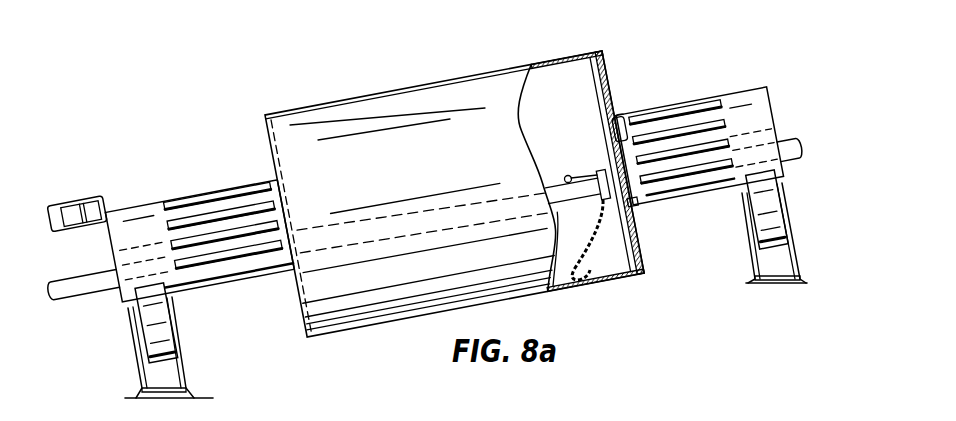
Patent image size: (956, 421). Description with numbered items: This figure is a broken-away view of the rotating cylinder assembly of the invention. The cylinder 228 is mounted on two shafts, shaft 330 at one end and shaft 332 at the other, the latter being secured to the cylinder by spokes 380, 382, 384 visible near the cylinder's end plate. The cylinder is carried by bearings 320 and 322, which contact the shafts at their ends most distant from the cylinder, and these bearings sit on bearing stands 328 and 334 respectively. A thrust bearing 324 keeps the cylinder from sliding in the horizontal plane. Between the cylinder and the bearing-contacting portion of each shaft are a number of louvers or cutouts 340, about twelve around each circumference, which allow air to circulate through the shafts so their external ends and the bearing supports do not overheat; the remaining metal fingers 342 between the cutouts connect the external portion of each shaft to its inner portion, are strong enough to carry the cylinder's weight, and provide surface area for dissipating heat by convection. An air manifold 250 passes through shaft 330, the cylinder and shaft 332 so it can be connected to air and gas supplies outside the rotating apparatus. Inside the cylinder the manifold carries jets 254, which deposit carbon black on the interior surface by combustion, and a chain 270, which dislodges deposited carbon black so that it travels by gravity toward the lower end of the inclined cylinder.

The cylinder 228 is at (422, 98).
The air manifold 250 is at (78, 287).
The jets 254 is at (579, 147).
The chain 270 is at (590, 272).
The bearing 320 is at (163, 330).
The bearing 322 is at (759, 222).
The thrust bearing 324 is at (97, 196).
The bearing stand 328 is at (186, 368).
The shaft 330 is at (143, 212).
The shaft 332 is at (740, 104).
The bearing stand 334 is at (748, 283).
The cutouts 340 is at (232, 240).
The metal fingers 342 is at (236, 222).
The spoke 380 is at (607, 62).
The spoke 382 is at (626, 106).
The spoke 384 is at (637, 232).